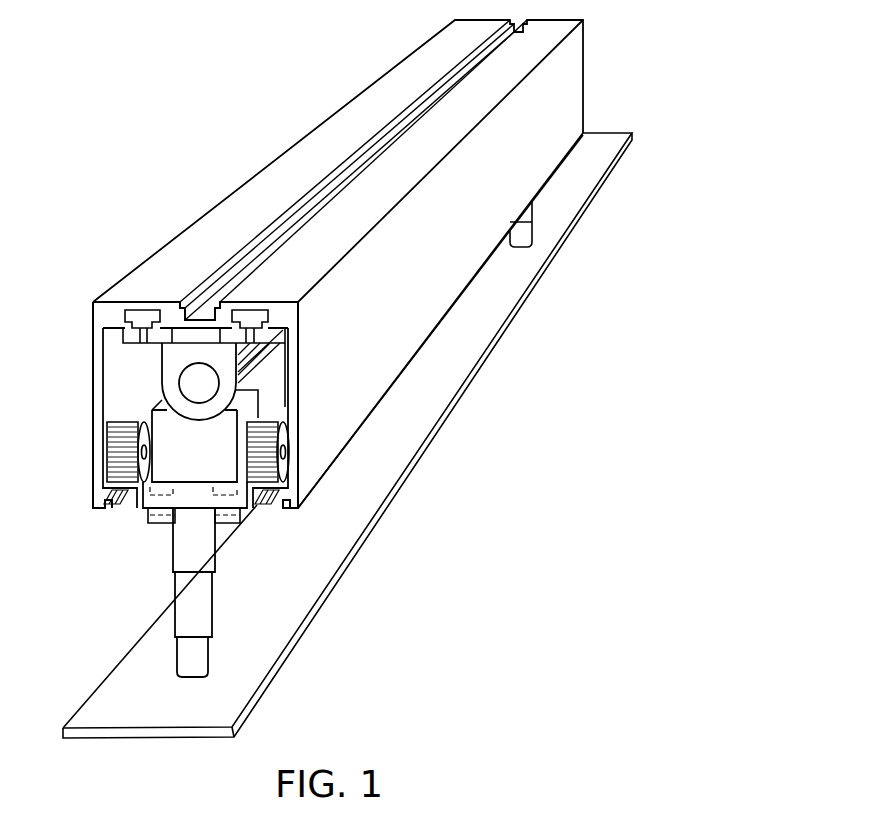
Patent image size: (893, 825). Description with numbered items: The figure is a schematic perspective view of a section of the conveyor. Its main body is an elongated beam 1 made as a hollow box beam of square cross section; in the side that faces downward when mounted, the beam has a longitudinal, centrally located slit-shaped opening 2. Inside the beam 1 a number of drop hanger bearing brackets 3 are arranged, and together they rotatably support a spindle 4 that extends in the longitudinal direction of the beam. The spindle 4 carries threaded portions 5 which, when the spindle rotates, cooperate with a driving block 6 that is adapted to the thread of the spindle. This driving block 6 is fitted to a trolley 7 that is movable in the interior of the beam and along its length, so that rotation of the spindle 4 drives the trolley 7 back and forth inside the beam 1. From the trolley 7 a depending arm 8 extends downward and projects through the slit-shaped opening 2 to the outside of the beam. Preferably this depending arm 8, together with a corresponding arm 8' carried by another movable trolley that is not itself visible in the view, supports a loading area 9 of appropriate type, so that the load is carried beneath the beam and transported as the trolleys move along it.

The beam 1 is at (293, 162).
The slit-shaped opening 2 is at (143, 507).
The drop hanger bearing bracket 3 is at (197, 352).
The spindle 4 is at (190, 380).
The threaded portion 5 is at (262, 353).
The driving block 6 is at (217, 467).
The trolley 7 is at (152, 418).
The depending arm 8 is at (139, 592).
The corresponding arm 8' is at (574, 239).
The loading area 9 is at (385, 478).